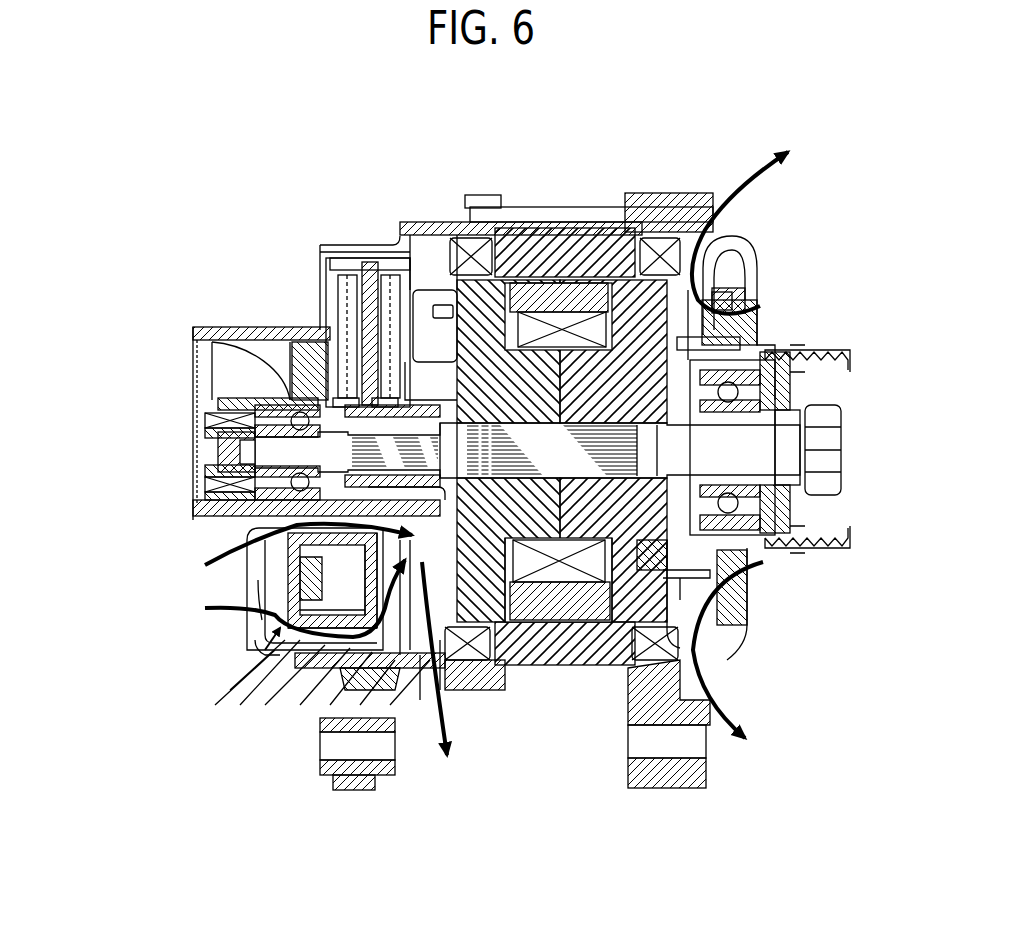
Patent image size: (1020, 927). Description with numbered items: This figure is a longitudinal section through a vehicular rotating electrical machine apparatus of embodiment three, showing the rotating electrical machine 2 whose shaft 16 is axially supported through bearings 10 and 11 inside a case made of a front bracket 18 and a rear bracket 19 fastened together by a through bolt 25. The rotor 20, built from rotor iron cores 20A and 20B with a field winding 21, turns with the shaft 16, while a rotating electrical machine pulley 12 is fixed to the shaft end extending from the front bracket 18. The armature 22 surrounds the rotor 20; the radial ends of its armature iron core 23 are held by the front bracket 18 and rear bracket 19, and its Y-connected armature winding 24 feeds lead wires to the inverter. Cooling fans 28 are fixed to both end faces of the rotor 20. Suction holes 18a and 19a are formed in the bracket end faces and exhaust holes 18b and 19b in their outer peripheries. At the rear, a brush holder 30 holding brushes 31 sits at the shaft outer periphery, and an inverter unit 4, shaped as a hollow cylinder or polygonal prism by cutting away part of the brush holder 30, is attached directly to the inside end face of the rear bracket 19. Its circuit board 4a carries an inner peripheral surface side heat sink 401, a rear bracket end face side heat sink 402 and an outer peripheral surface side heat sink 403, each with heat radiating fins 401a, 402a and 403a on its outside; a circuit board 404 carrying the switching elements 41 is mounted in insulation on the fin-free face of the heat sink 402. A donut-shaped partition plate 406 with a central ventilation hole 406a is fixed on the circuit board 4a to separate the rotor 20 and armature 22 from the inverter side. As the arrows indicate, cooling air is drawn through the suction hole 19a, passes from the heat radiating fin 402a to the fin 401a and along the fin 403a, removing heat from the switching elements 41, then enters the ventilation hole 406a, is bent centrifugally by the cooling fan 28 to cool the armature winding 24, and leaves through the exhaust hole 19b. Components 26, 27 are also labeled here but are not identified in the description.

The rotating electrical machine 2 is at (524, 205).
The inverter unit 4 is at (262, 715).
The circuit board 4a is at (338, 632).
The bearing 10 is at (752, 378).
The bearing 11 is at (205, 332).
The rotating electrical machine pulley 12 is at (835, 545).
The shaft 16 is at (770, 445).
The front bracket 18 is at (735, 260).
The suction hole 18a is at (748, 308).
The exhaust hole 18b is at (758, 256).
The rear bracket 19 is at (414, 218).
The suction hole 19a is at (248, 600).
The exhaust hole 19b is at (408, 700).
The rotor 20 is at (628, 453).
The rotor iron core 20A is at (627, 513).
The rotor iron core 20B is at (498, 560).
The field winding 21 is at (558, 578).
The armature 22 is at (553, 676).
The armature iron core 23 is at (560, 238).
The armature winding 24 is at (470, 248).
The through bolt 25 is at (740, 224).
The field coil 26 is at (583, 290).
The field coil bobbin 27 is at (558, 580).
The cooling fan 28 is at (425, 310).
The brush holder 30 is at (333, 300).
The brush 31 is at (390, 285).
The switching element 41 is at (258, 587).
The inner peripheral surface side heat sink 401 is at (248, 535).
The heat radiating fin 401a is at (225, 532).
The rear bracket end face side heat sink 402 is at (280, 632).
The heat radiating fin 402a is at (290, 628).
The outer peripheral surface side heat sink 403 is at (327, 633).
The heat radiating fin 403a is at (287, 657).
The circuit board 404 is at (265, 658).
The partition plate 406 is at (423, 668).
The ventilation hole 406a is at (447, 640).